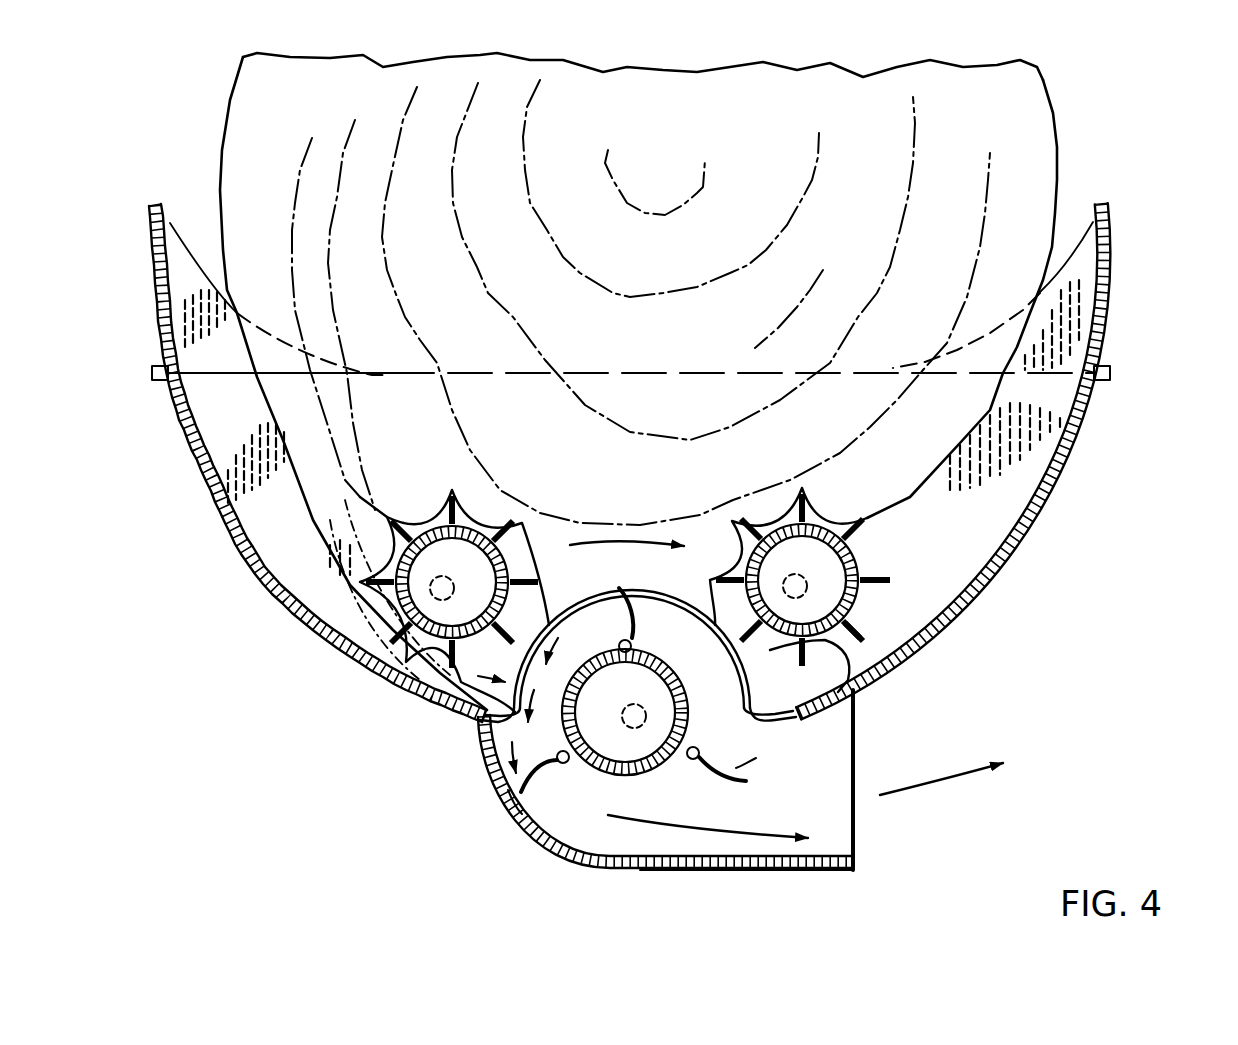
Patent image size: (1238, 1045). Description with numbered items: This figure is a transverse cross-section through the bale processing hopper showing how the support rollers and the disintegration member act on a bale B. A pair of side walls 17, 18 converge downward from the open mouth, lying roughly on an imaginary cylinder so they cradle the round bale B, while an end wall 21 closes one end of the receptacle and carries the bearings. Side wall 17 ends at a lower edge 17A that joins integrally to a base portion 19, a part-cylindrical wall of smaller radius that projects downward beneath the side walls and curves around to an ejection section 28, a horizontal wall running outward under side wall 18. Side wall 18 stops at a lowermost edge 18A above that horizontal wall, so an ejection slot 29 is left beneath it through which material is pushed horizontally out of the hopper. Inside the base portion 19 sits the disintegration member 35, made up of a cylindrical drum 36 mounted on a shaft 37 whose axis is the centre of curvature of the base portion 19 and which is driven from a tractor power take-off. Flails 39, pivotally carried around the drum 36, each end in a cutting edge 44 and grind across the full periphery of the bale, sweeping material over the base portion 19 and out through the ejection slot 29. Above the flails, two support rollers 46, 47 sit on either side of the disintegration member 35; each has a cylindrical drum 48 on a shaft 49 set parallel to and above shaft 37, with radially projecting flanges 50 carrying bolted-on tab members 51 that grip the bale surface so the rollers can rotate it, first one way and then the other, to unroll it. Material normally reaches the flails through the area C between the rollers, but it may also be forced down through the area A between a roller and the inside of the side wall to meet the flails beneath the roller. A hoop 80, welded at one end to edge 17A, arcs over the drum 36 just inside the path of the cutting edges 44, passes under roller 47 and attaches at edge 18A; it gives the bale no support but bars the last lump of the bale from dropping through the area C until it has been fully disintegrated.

The bale B is at (704, 130).
The additional feeding area A is at (322, 596).
The area between the rollers C is at (608, 572).
The side wall 17 is at (254, 566).
The side wall 18 is at (1005, 570).
The lower edge of side wall 17A is at (478, 730).
The lowermost edge of side wall 18A is at (782, 722).
The base portion 19 is at (552, 858).
The end wall 21 is at (228, 428).
The ejection section 28 is at (706, 871).
The ejection slot 29 is at (852, 828).
The disintegration member 35 is at (740, 758).
The cylindrical drum 36 is at (626, 778).
The shaft 37 is at (652, 692).
The flails 39 is at (636, 590).
The cutting edge 44 is at (520, 800).
The support roller 46 is at (480, 522).
The support roller 47 is at (858, 551).
The cylindrical drum of support roller 48 is at (840, 640).
The shaft of support roller 49 is at (628, 601).
The flanges 50 is at (855, 625).
The tab members 51 is at (870, 588).
The hoop 80 is at (600, 607).